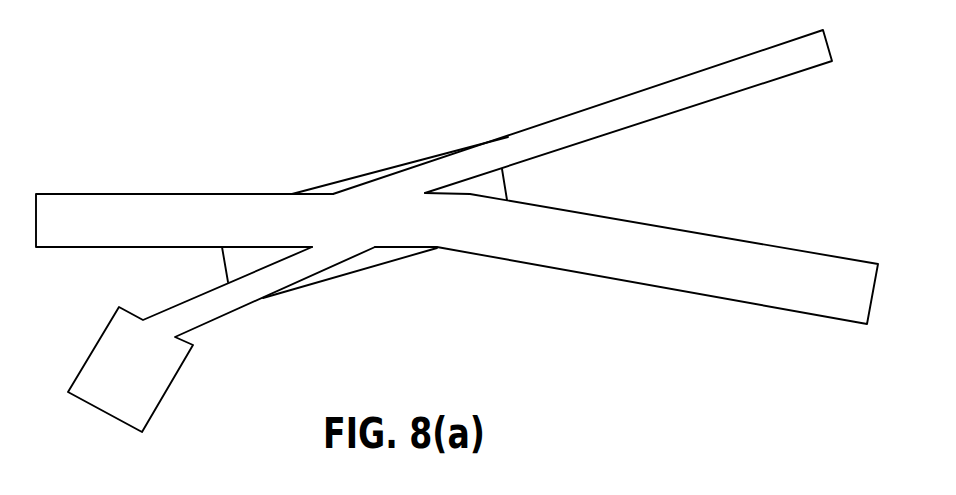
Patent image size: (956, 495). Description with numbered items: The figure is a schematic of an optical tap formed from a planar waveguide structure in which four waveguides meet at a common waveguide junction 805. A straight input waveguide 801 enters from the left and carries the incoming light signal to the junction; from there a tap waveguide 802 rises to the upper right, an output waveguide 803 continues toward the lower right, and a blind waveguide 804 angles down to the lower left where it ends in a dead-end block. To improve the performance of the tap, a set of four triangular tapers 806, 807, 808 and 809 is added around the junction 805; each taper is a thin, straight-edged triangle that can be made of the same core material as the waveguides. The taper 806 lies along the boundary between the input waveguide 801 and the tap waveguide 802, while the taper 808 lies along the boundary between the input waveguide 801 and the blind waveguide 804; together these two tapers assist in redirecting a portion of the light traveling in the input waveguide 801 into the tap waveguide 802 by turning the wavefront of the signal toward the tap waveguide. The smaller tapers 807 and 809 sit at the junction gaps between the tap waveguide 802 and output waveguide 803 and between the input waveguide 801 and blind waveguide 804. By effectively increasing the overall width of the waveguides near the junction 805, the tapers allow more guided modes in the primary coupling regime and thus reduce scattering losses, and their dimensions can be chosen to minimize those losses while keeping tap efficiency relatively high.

The input waveguide 801 is at (128, 194).
The tap waveguide 802 is at (575, 112).
The output waveguide 803 is at (657, 287).
The blind waveguide 804 is at (222, 318).
The waveguide junction 805 is at (392, 220).
The triangular taper 806 is at (362, 175).
The triangular taper 807 is at (509, 180).
The triangular taper 808 is at (372, 266).
The triangular taper 809 is at (222, 262).